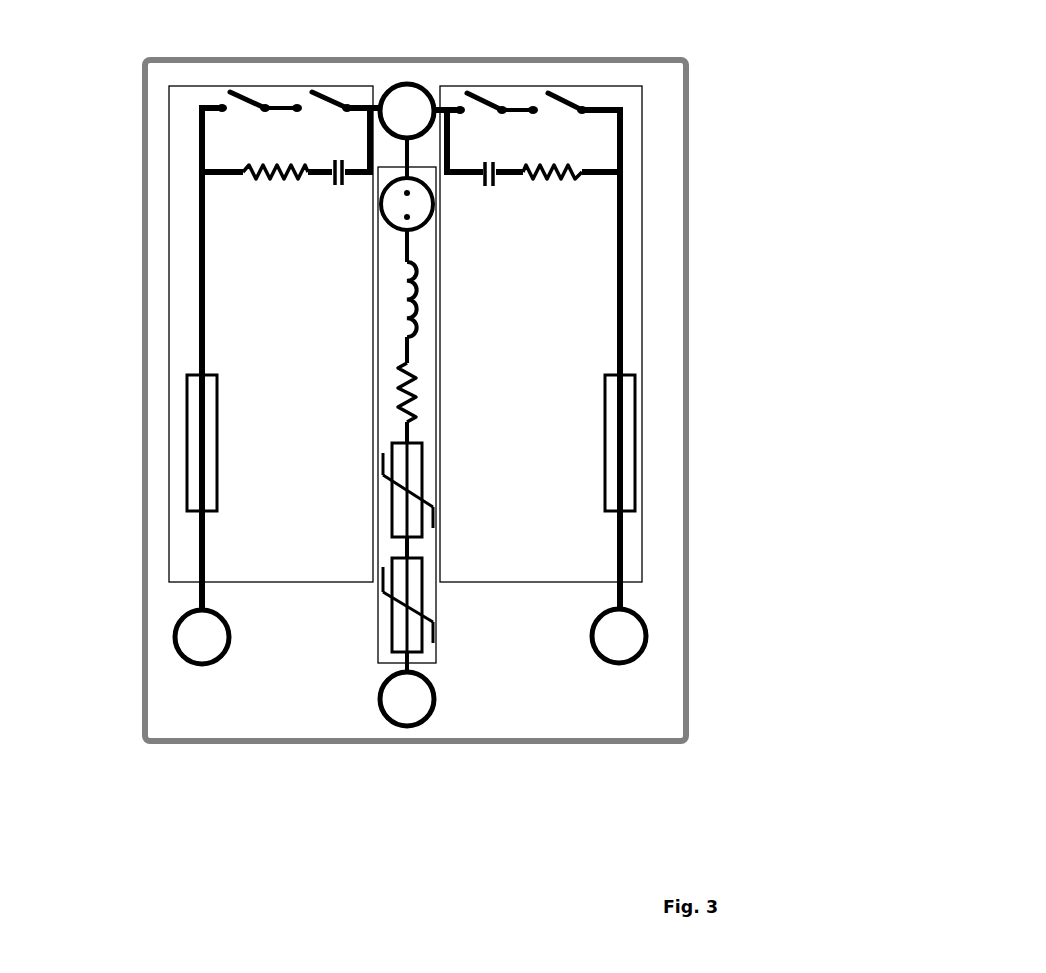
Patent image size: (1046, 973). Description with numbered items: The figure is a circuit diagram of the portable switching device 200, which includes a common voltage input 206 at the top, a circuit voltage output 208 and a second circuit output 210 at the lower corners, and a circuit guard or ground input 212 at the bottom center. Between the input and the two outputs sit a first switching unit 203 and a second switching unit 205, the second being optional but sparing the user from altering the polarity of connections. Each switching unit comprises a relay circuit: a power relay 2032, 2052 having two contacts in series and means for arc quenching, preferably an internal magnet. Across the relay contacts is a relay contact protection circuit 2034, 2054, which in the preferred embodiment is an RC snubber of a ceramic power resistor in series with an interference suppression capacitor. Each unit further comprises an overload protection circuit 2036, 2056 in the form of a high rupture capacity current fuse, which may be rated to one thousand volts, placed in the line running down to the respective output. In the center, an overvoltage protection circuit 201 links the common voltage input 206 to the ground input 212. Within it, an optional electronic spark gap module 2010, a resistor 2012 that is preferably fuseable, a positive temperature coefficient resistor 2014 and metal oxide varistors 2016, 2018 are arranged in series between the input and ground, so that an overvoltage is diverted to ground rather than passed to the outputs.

The portable switching device 200 is at (690, 108).
The overvoltage protection circuit 201 is at (437, 605).
The first switching unit 203 is at (187, 292).
The second switching unit 205 is at (636, 350).
The common voltage input 206 is at (416, 105).
The circuit voltage output 208 is at (192, 637).
The second circuit output 210 is at (620, 641).
The circuit guard or ground input 212 is at (403, 703).
The electronic spark gap module 2010 is at (419, 203).
The resistor 2012 is at (417, 306).
The positive temperature coefficient (PTC) resistor 2014 is at (410, 392).
The metal oxide varistor 2016 is at (390, 505).
The metal oxide varistor 2018 is at (392, 615).
The power relay 2032 is at (285, 100).
The relay contact protection circuit 2034 is at (306, 185).
The overload protection circuit 2036 is at (222, 450).
The power relay 2052 is at (529, 98).
The relay contact protection circuit 2054 is at (553, 198).
The overload protection circuit 2056 is at (635, 452).